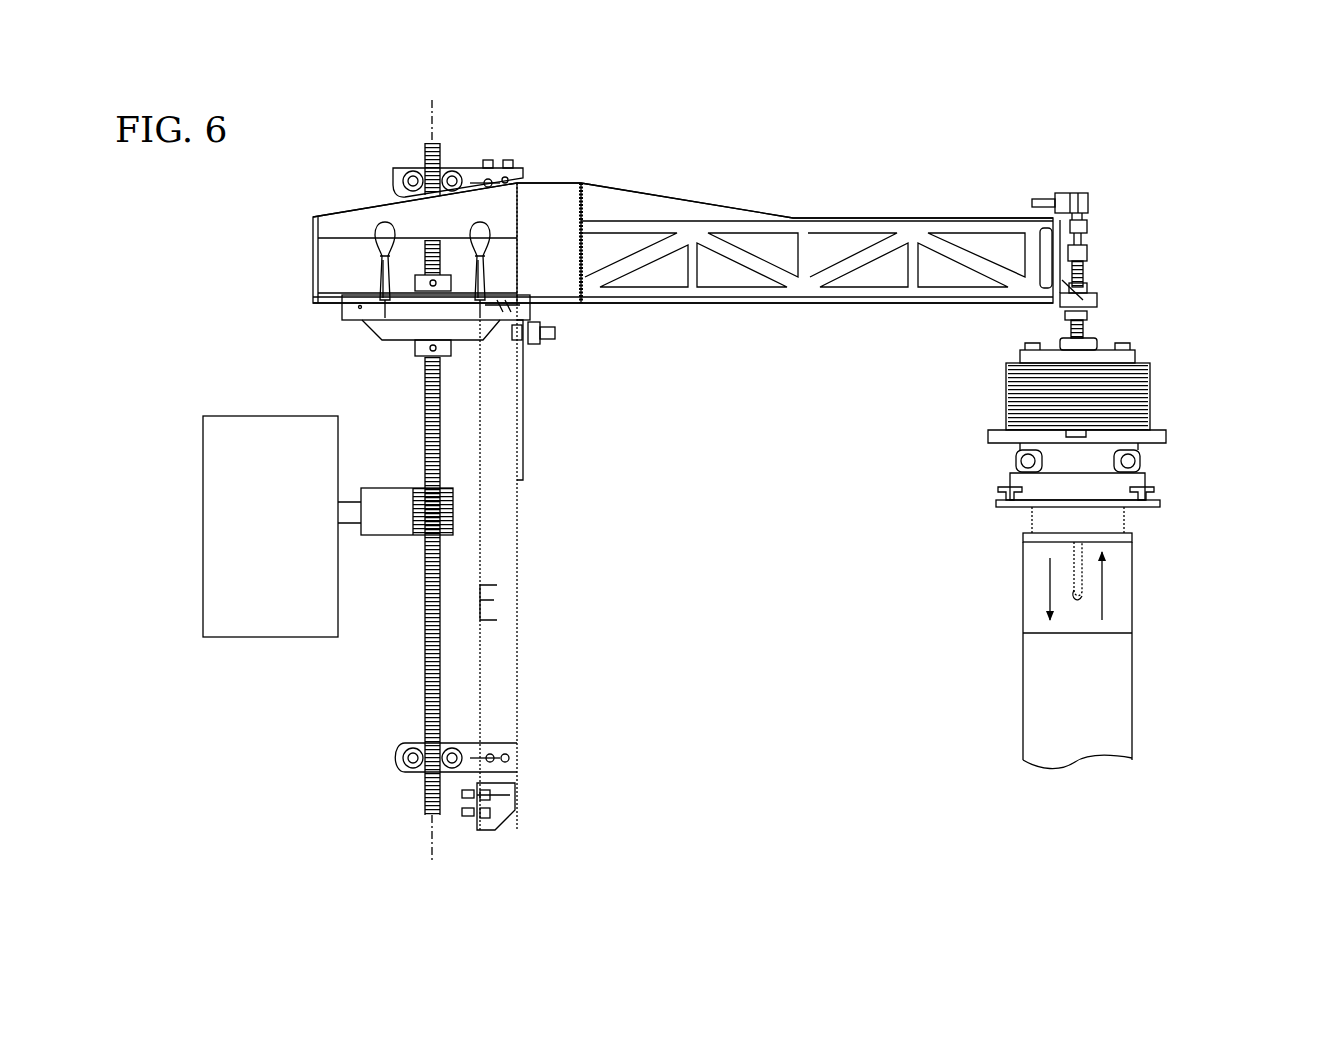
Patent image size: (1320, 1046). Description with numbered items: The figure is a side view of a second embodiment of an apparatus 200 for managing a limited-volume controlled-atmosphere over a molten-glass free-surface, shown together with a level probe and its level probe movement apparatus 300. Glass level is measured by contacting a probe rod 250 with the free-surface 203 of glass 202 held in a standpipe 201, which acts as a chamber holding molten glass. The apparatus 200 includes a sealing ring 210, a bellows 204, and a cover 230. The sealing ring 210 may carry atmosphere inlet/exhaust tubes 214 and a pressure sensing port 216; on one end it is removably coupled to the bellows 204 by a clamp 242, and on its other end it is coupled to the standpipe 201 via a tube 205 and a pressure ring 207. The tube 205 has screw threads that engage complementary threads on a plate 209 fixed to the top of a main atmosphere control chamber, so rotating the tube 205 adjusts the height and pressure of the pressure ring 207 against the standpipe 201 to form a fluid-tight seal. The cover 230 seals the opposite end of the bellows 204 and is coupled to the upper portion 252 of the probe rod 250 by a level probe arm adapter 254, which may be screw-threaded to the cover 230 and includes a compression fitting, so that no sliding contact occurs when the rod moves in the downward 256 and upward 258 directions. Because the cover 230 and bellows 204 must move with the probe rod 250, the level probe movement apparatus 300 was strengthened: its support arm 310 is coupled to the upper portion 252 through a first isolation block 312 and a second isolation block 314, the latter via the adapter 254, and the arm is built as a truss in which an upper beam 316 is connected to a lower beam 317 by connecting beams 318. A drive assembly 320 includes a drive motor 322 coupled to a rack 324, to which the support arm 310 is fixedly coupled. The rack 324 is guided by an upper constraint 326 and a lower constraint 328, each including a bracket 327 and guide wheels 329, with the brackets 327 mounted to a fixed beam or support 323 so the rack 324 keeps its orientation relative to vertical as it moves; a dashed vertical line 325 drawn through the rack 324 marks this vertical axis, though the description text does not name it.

The apparatus 200 is at (1195, 375).
The standpipe 201 is at (1023, 600).
The glass 202 is at (1115, 712).
The free-surface 203 is at (1030, 625).
The bellows 204 is at (1150, 410).
The tube 205 is at (1118, 522).
The pressure ring 207 is at (1130, 540).
The plate 209 is at (1160, 505).
The sealing ring 210 is at (1020, 462).
The atmosphere inlet/exhaust tubes 214 is at (1140, 460).
The pressure sensing port 216 is at (1010, 490).
The cover 230 is at (1140, 347).
The clamp 242 is at (988, 435).
The probe rod 250 is at (1076, 595).
The upper portion 252 is at (1077, 193).
The level probe arm adapter 254 is at (1092, 272).
The downward direction 256 is at (1048, 583).
The upward direction 258 is at (1102, 595).
The level probe movement apparatus 300 is at (822, 195).
The support arm 310 is at (880, 220).
The first isolation block 312 is at (1055, 195).
The second isolation block 314 is at (1058, 305).
The upper beam 316 is at (795, 222).
The lower beam 317 is at (778, 297).
The connecting beams 318 is at (690, 262).
The drive assembly 320 is at (265, 400).
The drive motor 322 is at (248, 620).
The fixed beam or support 323 is at (508, 598).
The rack 324 is at (425, 398).
The centerline 325 is at (432, 122).
The upper constraint 326 is at (470, 163).
The bracket 327 is at (517, 180).
The lower constraint 328 is at (528, 752).
The guide wheels 329 is at (413, 176).